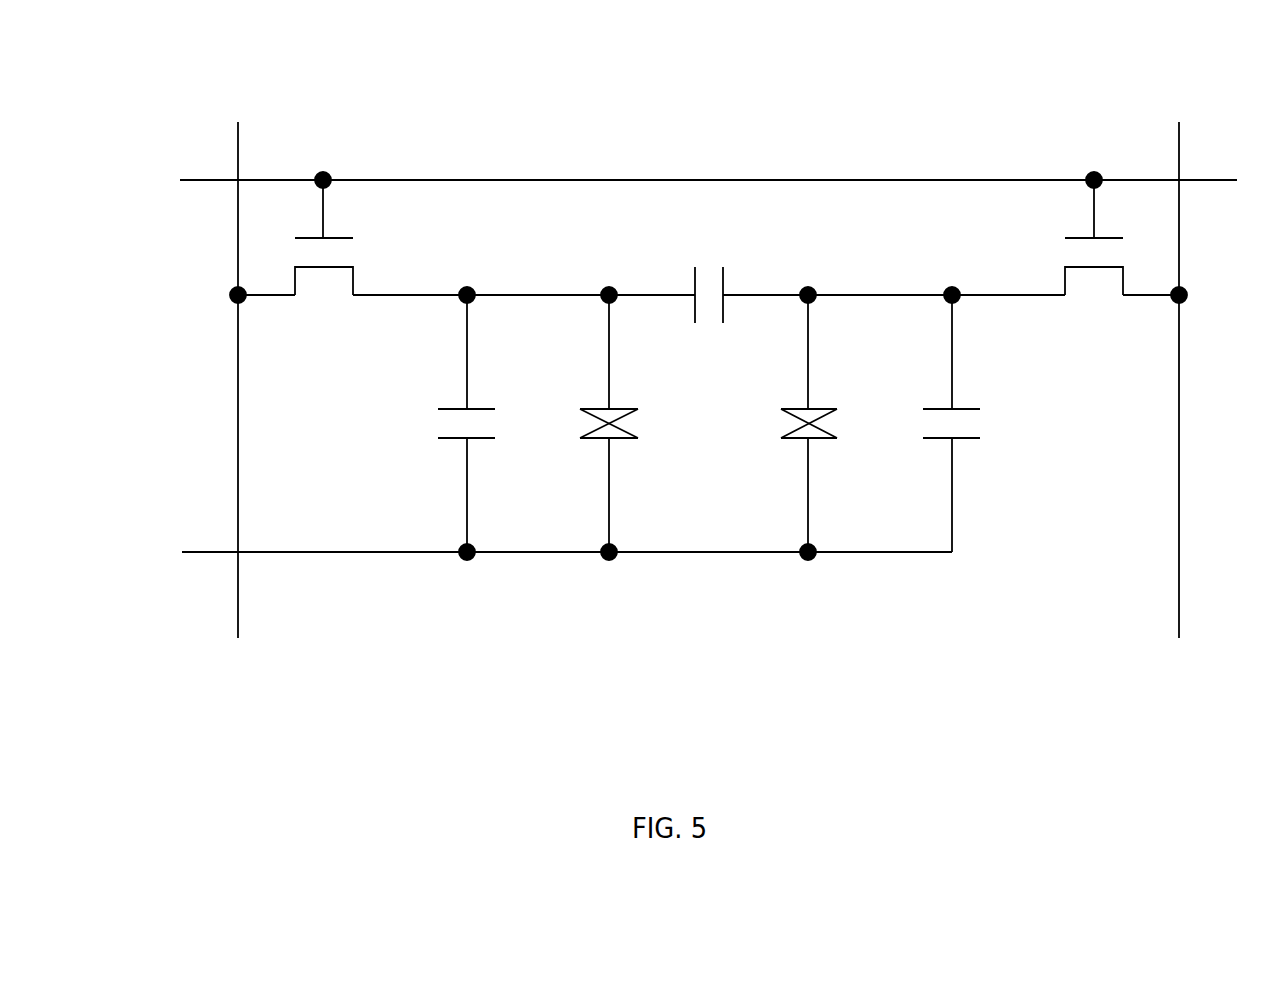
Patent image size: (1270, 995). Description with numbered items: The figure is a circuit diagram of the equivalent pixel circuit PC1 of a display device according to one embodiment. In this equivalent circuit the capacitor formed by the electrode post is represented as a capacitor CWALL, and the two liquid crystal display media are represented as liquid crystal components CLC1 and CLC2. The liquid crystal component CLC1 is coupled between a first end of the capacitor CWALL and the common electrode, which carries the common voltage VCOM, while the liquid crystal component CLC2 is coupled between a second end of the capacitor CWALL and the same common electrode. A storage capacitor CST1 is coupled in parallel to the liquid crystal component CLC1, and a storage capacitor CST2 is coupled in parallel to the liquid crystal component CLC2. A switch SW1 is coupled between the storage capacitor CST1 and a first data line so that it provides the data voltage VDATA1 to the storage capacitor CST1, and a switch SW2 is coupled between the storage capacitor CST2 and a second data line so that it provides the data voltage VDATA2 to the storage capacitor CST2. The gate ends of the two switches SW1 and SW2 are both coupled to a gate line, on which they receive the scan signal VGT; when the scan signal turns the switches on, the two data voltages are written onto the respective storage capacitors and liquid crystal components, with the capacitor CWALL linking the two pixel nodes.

The pixel circuit PC1 is at (130, 77).
The data voltage VDATA1 is at (259, 360).
The data voltage VDATA2 is at (1201, 360).
The scan signal VGT is at (682, 179).
The common voltage VCOM is at (523, 552).
The switch SW1 is at (324, 258).
The switch SW2 is at (1094, 258).
The capacitor CWALL is at (733, 275).
The storage capacitor CST1 is at (494, 423).
The storage capacitor CST2 is at (979, 423).
The liquid crystal component CLC1 is at (637, 423).
The liquid crystal component CLC2 is at (838, 423).